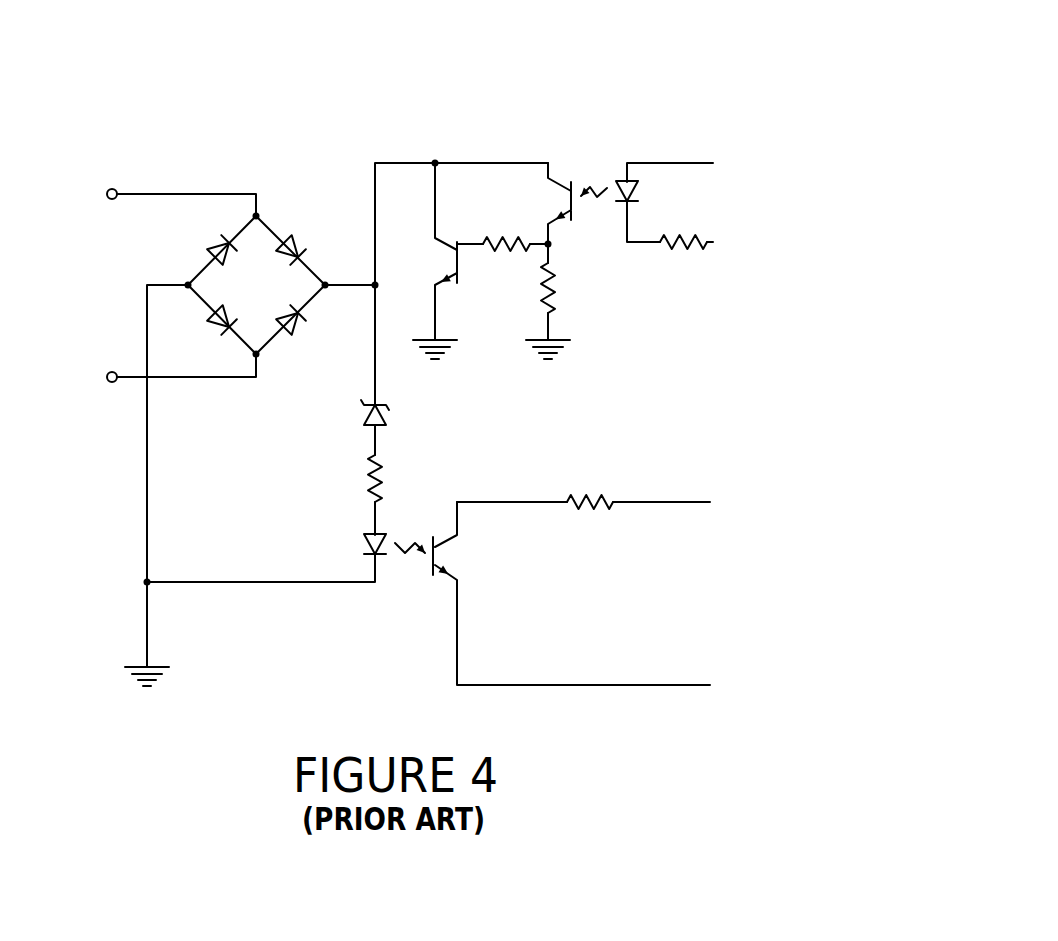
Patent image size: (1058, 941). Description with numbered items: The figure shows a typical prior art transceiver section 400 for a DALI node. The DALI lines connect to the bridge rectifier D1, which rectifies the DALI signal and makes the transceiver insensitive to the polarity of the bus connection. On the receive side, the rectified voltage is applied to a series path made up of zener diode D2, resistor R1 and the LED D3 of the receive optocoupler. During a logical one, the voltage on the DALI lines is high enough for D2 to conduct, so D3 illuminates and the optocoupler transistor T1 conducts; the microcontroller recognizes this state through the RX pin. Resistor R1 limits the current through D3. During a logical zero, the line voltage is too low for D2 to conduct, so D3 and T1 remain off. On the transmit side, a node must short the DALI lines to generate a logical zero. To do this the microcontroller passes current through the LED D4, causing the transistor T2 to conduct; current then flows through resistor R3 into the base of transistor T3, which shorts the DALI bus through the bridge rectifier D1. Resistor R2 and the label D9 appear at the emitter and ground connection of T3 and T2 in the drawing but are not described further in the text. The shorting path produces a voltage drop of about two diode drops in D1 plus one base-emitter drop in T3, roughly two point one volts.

The transceiver section 400 is at (676, 56).
The DALI lines DALI is at (153, 281).
The bridge rectifier D1 is at (257, 285).
The zener diode D2 is at (354, 419).
The resistor R1 is at (351, 479).
The LED on the receive optocoupler D3 is at (372, 550).
The transistor T1 is at (571, 593).
The RX pin RX is at (609, 504).
The transistor T3 is at (445, 261).
The resistor R3 is at (502, 261).
The resistor R2 is at (565, 288).
The ground reference D9 is at (554, 372).
The transistor T2 is at (577, 190).
The LED D4 is at (668, 206).